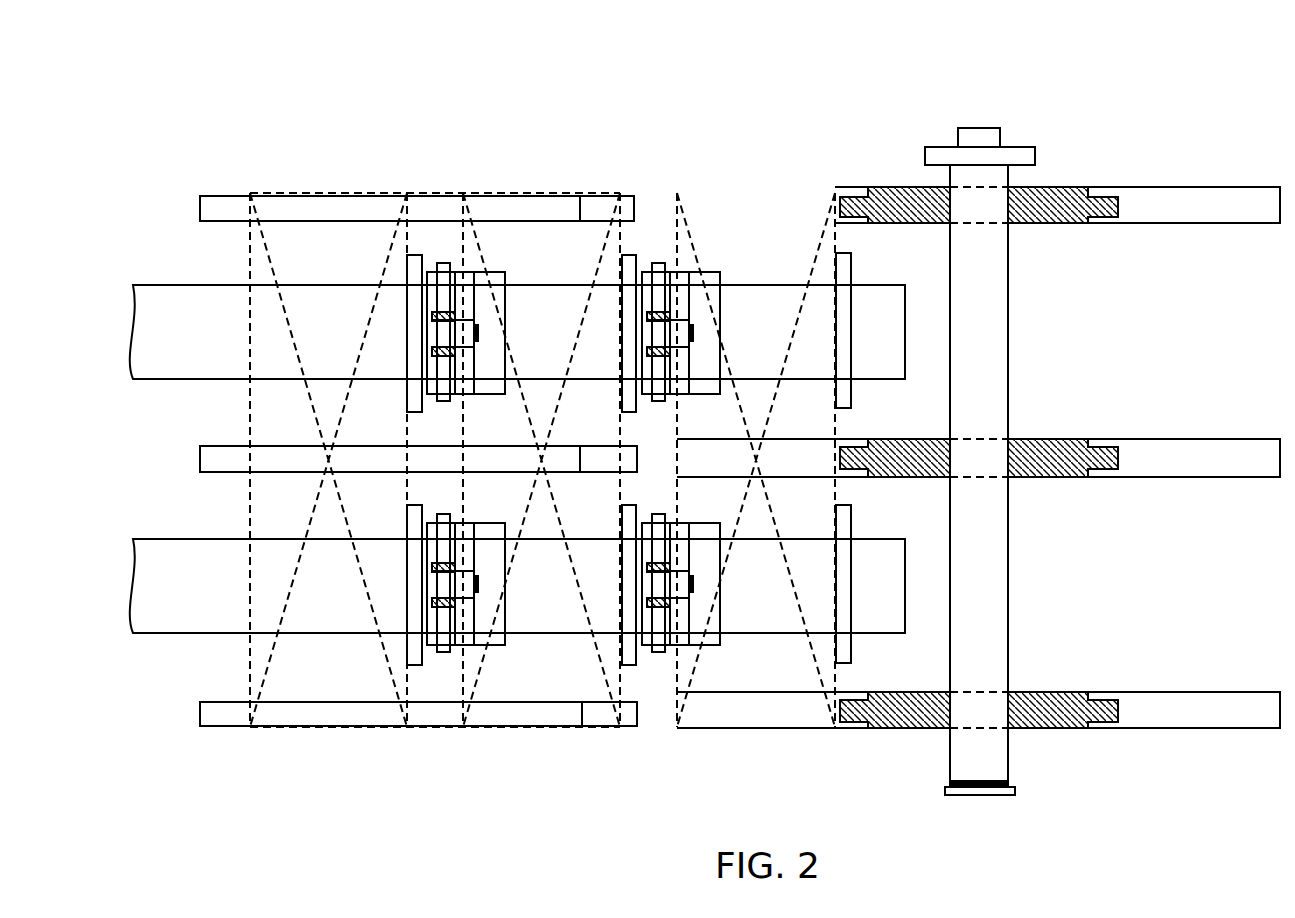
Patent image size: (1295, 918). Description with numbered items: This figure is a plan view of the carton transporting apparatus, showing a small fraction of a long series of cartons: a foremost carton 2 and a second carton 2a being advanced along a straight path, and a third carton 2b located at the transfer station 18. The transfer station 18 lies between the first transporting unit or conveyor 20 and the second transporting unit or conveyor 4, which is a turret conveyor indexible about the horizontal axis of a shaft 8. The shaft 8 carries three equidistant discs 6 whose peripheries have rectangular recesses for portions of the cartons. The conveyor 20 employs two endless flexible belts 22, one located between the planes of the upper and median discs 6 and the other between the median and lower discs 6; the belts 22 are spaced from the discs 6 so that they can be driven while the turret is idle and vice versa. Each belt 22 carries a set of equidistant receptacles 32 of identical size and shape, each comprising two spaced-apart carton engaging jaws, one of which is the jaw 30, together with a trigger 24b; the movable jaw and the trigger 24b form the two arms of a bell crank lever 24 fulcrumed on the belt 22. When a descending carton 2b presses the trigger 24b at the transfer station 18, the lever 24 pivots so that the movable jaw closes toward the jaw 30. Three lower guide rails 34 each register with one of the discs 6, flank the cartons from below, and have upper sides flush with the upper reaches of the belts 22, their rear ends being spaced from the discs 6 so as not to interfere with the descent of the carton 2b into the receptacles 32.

The foremost carton 2 is at (332, 202).
The second carton 2a is at (543, 238).
The third carton 2b is at (772, 316).
The second transporting unit or conveyor 4 is at (1090, 110).
The discs 6 is at (1238, 195).
The shaft 8 is at (987, 578).
The transfer station 18 is at (782, 752).
The first transporting unit or conveyor 20 is at (580, 112).
The endless flexible elements or belts 22 is at (212, 351).
The bell crank lever 24 is at (445, 258).
The trigger or movement effecting means 24b is at (499, 278).
The jaw or holder 30 is at (412, 256).
The holding means or receptacles 32 is at (556, 248).
The lower guide rails or guide means 34 is at (212, 207).